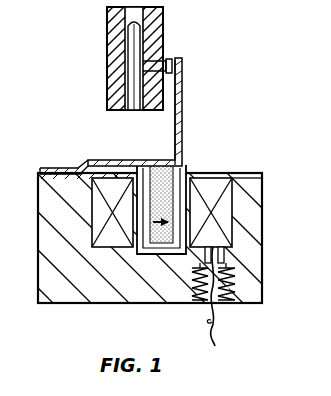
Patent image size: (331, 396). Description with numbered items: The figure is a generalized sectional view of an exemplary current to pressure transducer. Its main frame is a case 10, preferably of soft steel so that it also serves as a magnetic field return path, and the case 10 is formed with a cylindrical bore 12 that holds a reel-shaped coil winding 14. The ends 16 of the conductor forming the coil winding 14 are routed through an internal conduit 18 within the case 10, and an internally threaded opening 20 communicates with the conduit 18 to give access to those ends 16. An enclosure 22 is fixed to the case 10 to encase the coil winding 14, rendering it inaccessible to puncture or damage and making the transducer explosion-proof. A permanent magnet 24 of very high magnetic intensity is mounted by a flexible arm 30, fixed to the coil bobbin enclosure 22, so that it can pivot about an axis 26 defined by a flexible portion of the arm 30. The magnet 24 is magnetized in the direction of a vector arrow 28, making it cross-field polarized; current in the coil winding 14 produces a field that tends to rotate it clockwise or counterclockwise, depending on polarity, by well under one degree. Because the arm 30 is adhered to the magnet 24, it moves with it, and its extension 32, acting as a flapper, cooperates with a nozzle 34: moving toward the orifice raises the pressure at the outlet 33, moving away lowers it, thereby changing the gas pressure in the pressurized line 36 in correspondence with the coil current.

The case 10 is at (262, 268).
The cylindrical bore 12 is at (228, 210).
The coil winding 14 is at (262, 192).
The ends of the coil winding conductor 16 is at (215, 312).
The internal conduit 18 is at (224, 257).
The internally threaded opening 20 is at (201, 302).
The enclosure 22 is at (205, 178).
The permanent magnet 24 is at (163, 166).
The axis 26 is at (80, 157).
The vector arrow 28 is at (166, 254).
The arm 30 is at (188, 87).
The extension 32 is at (183, 61).
The outlet 33 is at (128, 108).
The nozzle 34 is at (170, 62).
The pressurized line 36 is at (102, 74).